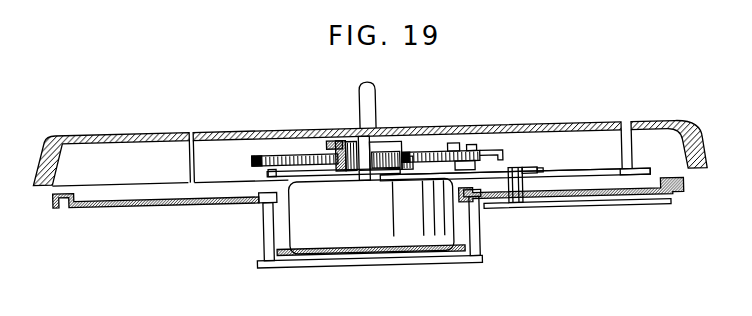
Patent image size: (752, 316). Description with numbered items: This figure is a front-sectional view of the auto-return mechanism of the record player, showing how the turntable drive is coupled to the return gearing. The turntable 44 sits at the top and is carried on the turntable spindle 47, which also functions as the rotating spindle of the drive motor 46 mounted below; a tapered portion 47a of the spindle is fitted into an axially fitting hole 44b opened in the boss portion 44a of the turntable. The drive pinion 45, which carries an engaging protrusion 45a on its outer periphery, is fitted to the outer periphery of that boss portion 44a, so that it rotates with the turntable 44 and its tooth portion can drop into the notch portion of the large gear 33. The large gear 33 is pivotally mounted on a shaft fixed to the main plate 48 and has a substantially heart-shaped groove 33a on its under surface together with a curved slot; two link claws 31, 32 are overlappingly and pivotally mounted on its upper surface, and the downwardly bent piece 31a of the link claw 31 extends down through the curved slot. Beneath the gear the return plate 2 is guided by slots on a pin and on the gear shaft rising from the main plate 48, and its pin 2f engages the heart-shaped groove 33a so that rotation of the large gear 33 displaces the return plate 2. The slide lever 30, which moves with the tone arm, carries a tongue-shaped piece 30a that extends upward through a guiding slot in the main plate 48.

The return plate 2 is at (598, 175).
The pin 2f is at (262, 193).
The slide lever 30 is at (603, 211).
The tongue-shaped piece 30a is at (541, 175).
The link claw 31 is at (481, 153).
The downwardly bent piece 31a is at (503, 160).
The link claw 32 is at (445, 145).
The large gear 33 is at (252, 158).
The heart-shaped groove 33a is at (307, 174).
The turntable 44 is at (220, 128).
The boss portion 44a is at (349, 141).
The axially fitting hole 44b is at (362, 171).
The drive pinion 45 is at (393, 147).
The engaging protrusion 45a is at (333, 140).
The drive motor 46 is at (388, 230).
The turntable spindle 47 is at (374, 90).
The tapered portion 47a is at (404, 171).
The main plate 48 is at (125, 201).